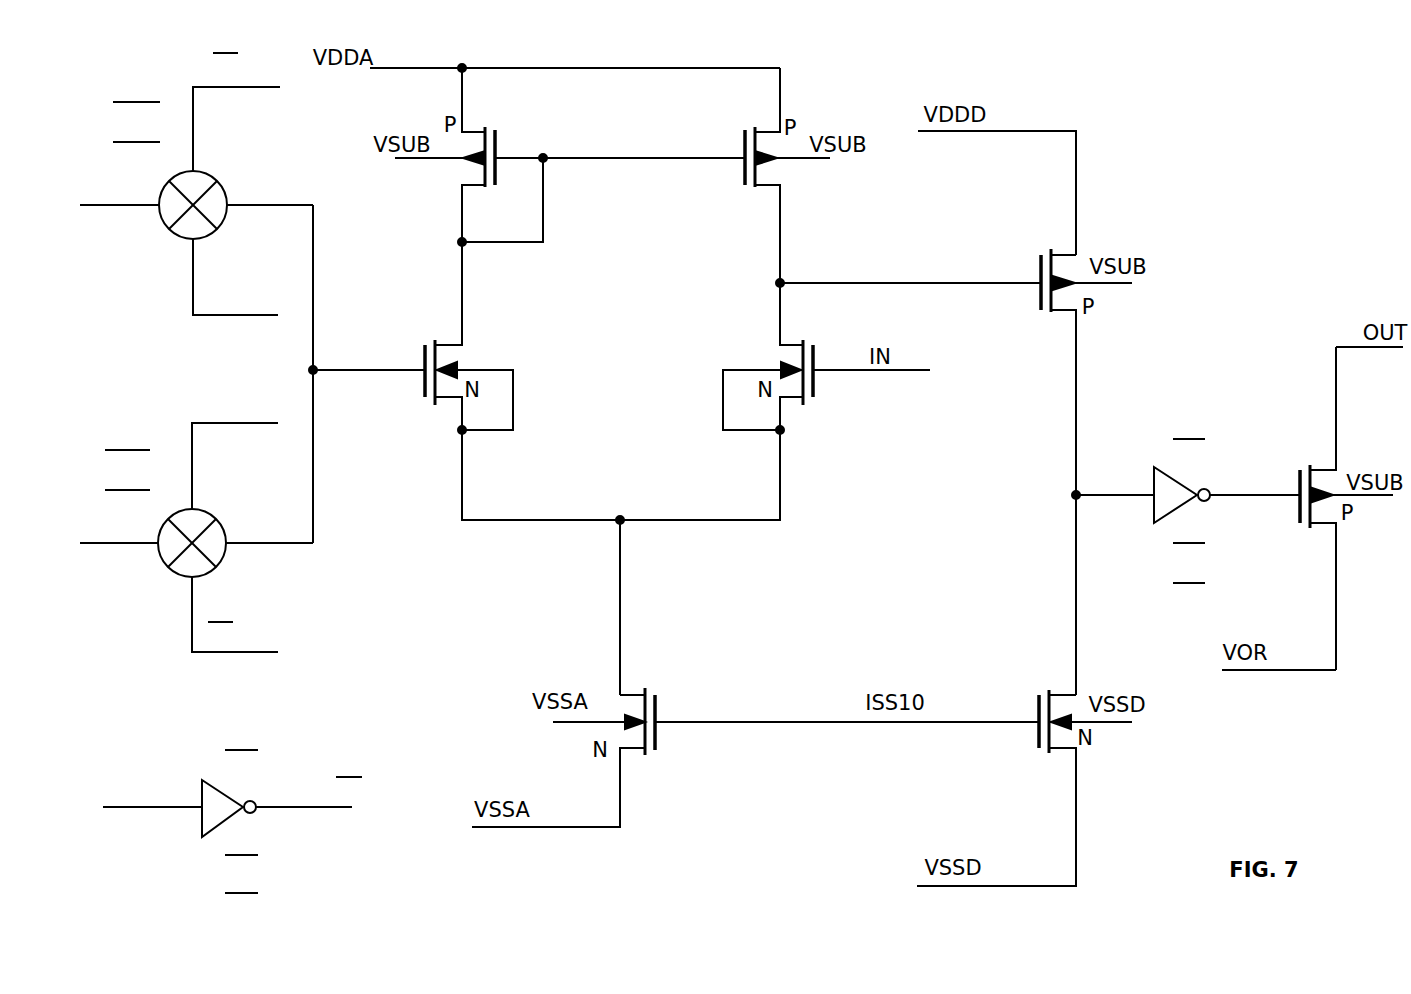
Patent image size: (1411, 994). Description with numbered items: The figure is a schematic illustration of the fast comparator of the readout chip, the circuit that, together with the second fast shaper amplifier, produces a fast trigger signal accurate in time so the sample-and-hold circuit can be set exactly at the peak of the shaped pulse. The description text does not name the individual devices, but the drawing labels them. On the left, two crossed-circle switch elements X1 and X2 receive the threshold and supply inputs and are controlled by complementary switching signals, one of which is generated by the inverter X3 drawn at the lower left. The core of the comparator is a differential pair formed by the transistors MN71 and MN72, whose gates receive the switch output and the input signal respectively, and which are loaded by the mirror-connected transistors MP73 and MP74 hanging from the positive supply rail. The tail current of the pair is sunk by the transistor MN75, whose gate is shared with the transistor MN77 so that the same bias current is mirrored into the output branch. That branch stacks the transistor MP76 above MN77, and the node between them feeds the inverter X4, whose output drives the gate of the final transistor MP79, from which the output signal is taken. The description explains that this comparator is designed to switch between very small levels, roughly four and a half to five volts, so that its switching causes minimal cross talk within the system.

The PMOS load transistor MP73 is at (570, 157).
The PMOS load transistor MP74 is at (772, 177).
The NMOS input transistor MN71 is at (413, 338).
The NMOS input transistor MN72 is at (826, 358).
The NMOS tail current transistor MN75 is at (755, 745).
The PMOS output transistor MP76 is at (956, 472).
The NMOS current mirror transistor MN77 is at (1024, 788).
The PMOS output transistor MP79 is at (1332, 508).
The analog switch X1 is at (179, 524).
The analog switch X2 is at (184, 184).
The inverter X3 is at (229, 822).
The inverter X4 is at (1188, 511).